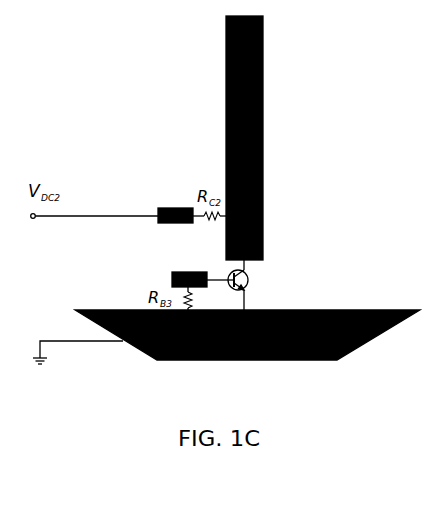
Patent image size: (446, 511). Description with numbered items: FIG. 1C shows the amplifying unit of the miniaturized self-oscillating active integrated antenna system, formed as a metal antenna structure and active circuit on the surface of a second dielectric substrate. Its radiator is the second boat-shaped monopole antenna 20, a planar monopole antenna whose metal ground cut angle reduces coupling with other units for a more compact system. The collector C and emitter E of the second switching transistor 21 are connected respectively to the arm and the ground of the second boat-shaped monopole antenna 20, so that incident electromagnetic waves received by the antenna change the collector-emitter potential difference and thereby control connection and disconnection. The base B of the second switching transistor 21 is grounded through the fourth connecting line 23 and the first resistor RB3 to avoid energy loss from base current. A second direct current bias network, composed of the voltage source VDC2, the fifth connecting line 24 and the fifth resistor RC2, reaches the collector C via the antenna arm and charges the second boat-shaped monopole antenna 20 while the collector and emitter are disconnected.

The second boat-shaped monopole antenna 20 is at (272, 161).
The second switching transistor 21 is at (258, 276).
The fourth connecting line 23 is at (185, 271).
The fifth connecting line 24 is at (172, 207).